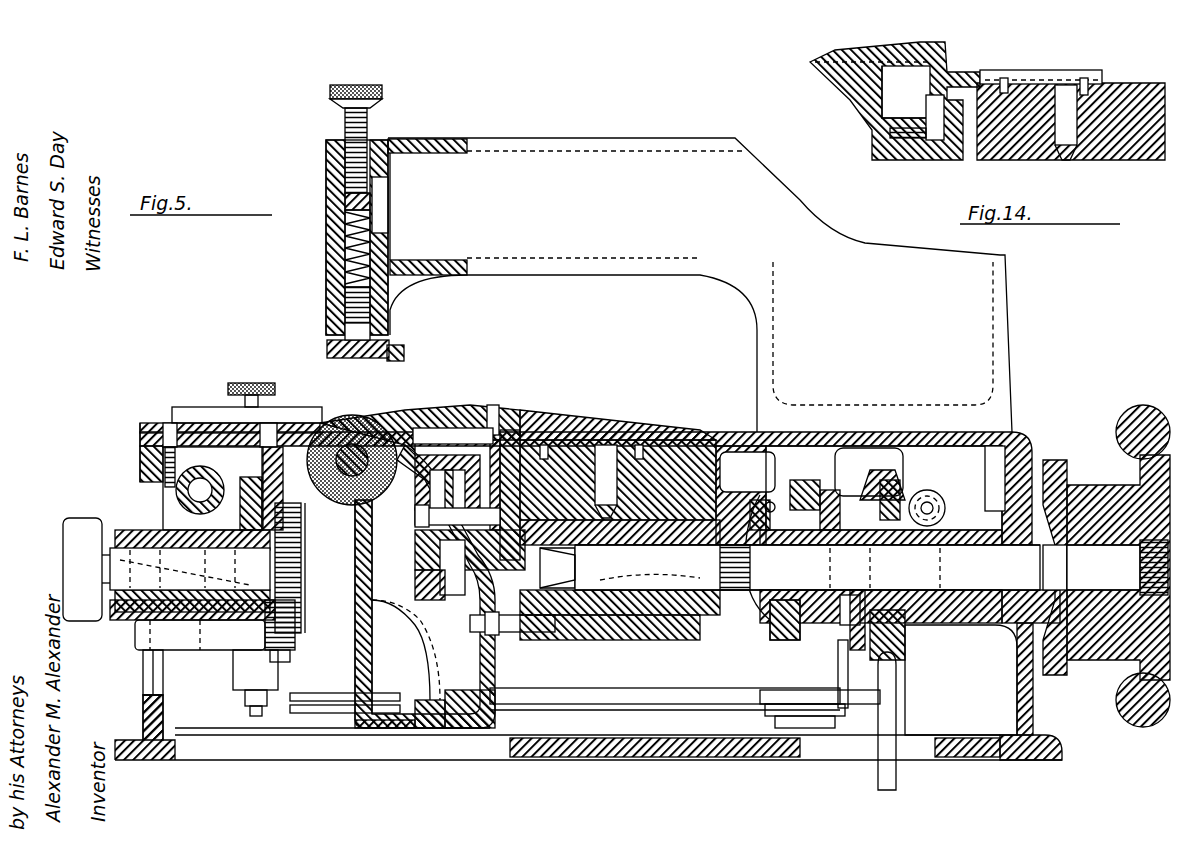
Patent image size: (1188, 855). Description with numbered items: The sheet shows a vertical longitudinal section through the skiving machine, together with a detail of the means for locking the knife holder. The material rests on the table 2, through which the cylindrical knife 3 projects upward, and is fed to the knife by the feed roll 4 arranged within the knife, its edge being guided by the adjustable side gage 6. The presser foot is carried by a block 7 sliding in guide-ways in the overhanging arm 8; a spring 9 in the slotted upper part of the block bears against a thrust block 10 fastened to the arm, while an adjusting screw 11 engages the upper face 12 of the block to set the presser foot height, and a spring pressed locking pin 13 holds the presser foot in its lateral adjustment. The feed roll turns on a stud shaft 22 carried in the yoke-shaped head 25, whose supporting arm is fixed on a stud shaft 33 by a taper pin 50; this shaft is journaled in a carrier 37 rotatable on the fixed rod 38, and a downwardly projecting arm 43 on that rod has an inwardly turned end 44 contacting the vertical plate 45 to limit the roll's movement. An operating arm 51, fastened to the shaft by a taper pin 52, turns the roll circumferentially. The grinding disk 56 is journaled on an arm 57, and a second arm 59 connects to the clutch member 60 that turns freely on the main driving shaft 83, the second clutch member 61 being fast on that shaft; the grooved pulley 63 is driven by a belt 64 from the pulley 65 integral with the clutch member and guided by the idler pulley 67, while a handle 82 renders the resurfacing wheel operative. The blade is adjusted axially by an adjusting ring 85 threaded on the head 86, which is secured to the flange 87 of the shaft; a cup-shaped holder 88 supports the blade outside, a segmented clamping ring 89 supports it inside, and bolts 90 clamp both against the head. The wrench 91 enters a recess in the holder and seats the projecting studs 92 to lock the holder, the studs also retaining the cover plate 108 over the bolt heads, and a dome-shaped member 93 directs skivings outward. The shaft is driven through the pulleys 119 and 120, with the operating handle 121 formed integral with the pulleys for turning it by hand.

In FIG. 14, the table 2 is at (1125, 82).
In FIG. 5, the cylindrical knife 3 is at (418, 415).
In FIG. 5, the feed roll 4 is at (397, 480).
In FIG. 5, the side gage 6 is at (192, 410).
In FIG. 5, the block 7 is at (327, 349).
In FIG. 5, the overhanging arm 8 is at (553, 140).
In FIG. 5, the spring 9 is at (326, 268).
In FIG. 5, the thrust block 10 is at (340, 318).
In FIG. 5, the adjusting screw 11 is at (370, 125).
In FIG. 5, the upper face 12 is at (378, 207).
In FIG. 5, the spring pressed locking pin 13 is at (406, 353).
In FIG. 5, the stud shaft 22 is at (345, 505).
In FIG. 5, the yoke-shaped head 25 is at (275, 480).
In FIG. 5, the stud shaft 33 is at (110, 570).
In FIG. 5, the carrier 37 is at (170, 500).
In FIG. 5, the fixed rod 38 is at (196, 478).
In FIG. 5, the downwardly projecting arm 43 is at (135, 615).
In FIG. 5, the inwardly turned end 44 is at (190, 650).
In FIG. 5, the vertical plate 45 is at (150, 655).
In FIG. 5, the taper pin 50 is at (240, 665).
In FIG. 5, the operating arm 51 is at (118, 536).
In FIG. 5, the taper pin 52 is at (135, 532).
In FIG. 5, the grinding disk 56 is at (303, 590).
In FIG. 5, the arm 57 is at (720, 450).
In FIG. 5, the second arm 59 is at (770, 495).
In FIG. 5, the clutch member 60 is at (865, 492).
In FIG. 5, the second clutch member 61 is at (905, 495).
In FIG. 5, the grooved pulley 63 is at (320, 712).
In FIG. 5, the belt 64 is at (660, 700).
In FIG. 5, the pulley 65 is at (882, 680).
In FIG. 5, the idler pulley 67 is at (775, 700).
In FIG. 5, the handle 82 is at (145, 700).
In FIG. 5, the main driving shaft 83 is at (780, 580).
In FIG. 5, the adjusting ring 85 is at (455, 730).
In FIG. 5, the head 86 is at (450, 460).
In FIG. 5, the flange 87 is at (510, 445).
In FIG. 5, the cup-shaped holder 88 is at (425, 730).
In FIG. 5, the clamping ring 89 is at (375, 730).
In FIG. 5, the bolts 90 is at (505, 430).
In FIG. 14, the wrench 91 is at (1028, 72).
In FIG. 14, the projecting studs 92 is at (1084, 76).
In FIG. 5, the projecting studs 92 is at (630, 430).
In FIG. 5, the dome-shaped member 93 is at (405, 625).
In FIG. 5, the cover plate 108 is at (645, 425).
In FIG. 5, the pulley 119 is at (900, 650).
In FIG. 5, the pulley 120 is at (1058, 462).
In FIG. 5, the operating handle 121 is at (1138, 420).